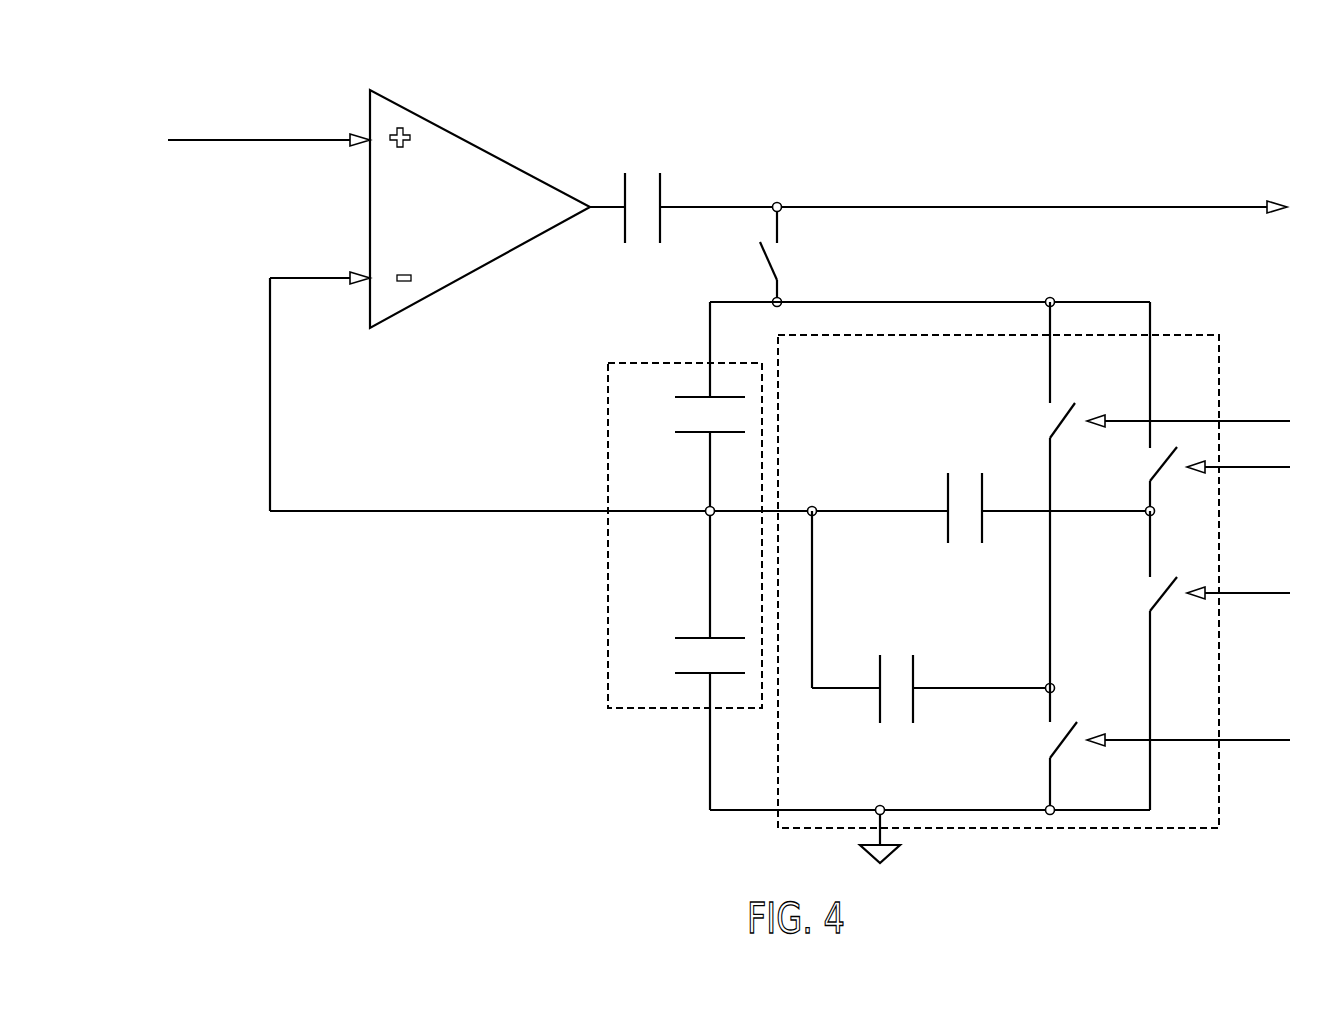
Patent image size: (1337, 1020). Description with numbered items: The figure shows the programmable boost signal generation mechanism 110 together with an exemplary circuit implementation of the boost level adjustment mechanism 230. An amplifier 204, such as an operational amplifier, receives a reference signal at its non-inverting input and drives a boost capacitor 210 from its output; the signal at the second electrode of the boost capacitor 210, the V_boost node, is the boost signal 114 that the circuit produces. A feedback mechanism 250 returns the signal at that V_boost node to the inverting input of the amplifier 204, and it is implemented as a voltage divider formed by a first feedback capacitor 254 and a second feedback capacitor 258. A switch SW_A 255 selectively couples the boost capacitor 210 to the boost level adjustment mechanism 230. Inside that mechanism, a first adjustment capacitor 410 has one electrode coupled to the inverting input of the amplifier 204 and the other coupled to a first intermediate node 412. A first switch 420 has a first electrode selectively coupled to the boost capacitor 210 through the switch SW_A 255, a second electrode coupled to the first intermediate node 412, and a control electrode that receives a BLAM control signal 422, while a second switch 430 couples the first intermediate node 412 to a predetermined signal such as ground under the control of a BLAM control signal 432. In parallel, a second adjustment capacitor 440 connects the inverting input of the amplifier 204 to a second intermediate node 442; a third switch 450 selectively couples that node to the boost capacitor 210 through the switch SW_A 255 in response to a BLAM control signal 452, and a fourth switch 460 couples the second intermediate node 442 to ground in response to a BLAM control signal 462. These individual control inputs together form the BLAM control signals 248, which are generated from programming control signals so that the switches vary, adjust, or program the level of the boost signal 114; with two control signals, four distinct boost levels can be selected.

The programmable boost signal generation mechanism 110 is at (482, 740).
The boost signal 114 is at (1219, 207).
The amplifier 204 is at (471, 142).
The boost capacitor 210 is at (642, 149).
The switch SW_A 255 is at (801, 255).
The feedback mechanism 250 is at (608, 570).
The first capacitor C_1 254 is at (685, 415).
The second capacitor C_2 258 is at (685, 658).
The boost level adjustment mechanism 230 is at (885, 452).
The first capacitor C_F1 410 is at (969, 544).
The first intermediate node 412 is at (1020, 511).
The second capacitor C_F2 440 is at (900, 726).
The second intermediate node 442 is at (984, 688).
The third switch SW_3 450 is at (1027, 495).
The fourth switch SW_4 460 is at (1030, 751).
The first switch SW_1 420 is at (1132, 409).
The second switch SW_2 430 is at (1132, 660).
The BLAM control signal 452 is at (1188, 405).
The BLAM control signal 422 is at (1238, 450).
The BLAM control signal 432 is at (1238, 577).
The BLAM control signal 462 is at (1188, 755).
The BLAM control signals 248 is at (1289, 669).